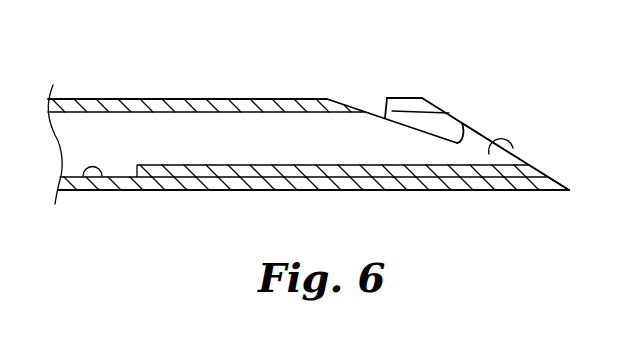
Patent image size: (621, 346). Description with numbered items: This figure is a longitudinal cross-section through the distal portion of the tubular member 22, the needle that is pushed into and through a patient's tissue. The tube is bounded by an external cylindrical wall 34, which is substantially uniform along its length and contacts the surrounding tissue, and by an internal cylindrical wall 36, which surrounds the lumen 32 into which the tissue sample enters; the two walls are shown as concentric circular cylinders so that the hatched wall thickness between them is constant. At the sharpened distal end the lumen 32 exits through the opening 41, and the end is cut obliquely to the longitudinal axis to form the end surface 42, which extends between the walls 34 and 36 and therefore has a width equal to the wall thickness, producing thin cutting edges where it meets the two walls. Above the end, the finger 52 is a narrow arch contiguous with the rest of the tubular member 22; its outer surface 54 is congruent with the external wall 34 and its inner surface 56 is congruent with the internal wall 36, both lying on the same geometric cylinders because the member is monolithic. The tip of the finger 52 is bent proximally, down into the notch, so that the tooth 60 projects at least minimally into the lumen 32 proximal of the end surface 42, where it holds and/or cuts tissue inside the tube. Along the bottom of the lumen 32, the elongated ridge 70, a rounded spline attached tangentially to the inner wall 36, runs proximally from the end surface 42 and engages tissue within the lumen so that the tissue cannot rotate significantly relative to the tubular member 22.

The tubular member 22 is at (168, 88).
The lumen 32 is at (93, 142).
The external cylindrical wall 34 is at (131, 192).
The internal cylindrical wall 36 is at (88, 191).
The opening 41 is at (505, 165).
The end surface 42 is at (571, 187).
The finger 52 is at (398, 97).
The outer surface of finger 54 is at (420, 97).
The inner surface of finger 56 is at (462, 116).
The tooth 60 is at (384, 104).
The ridge 70 is at (213, 167).